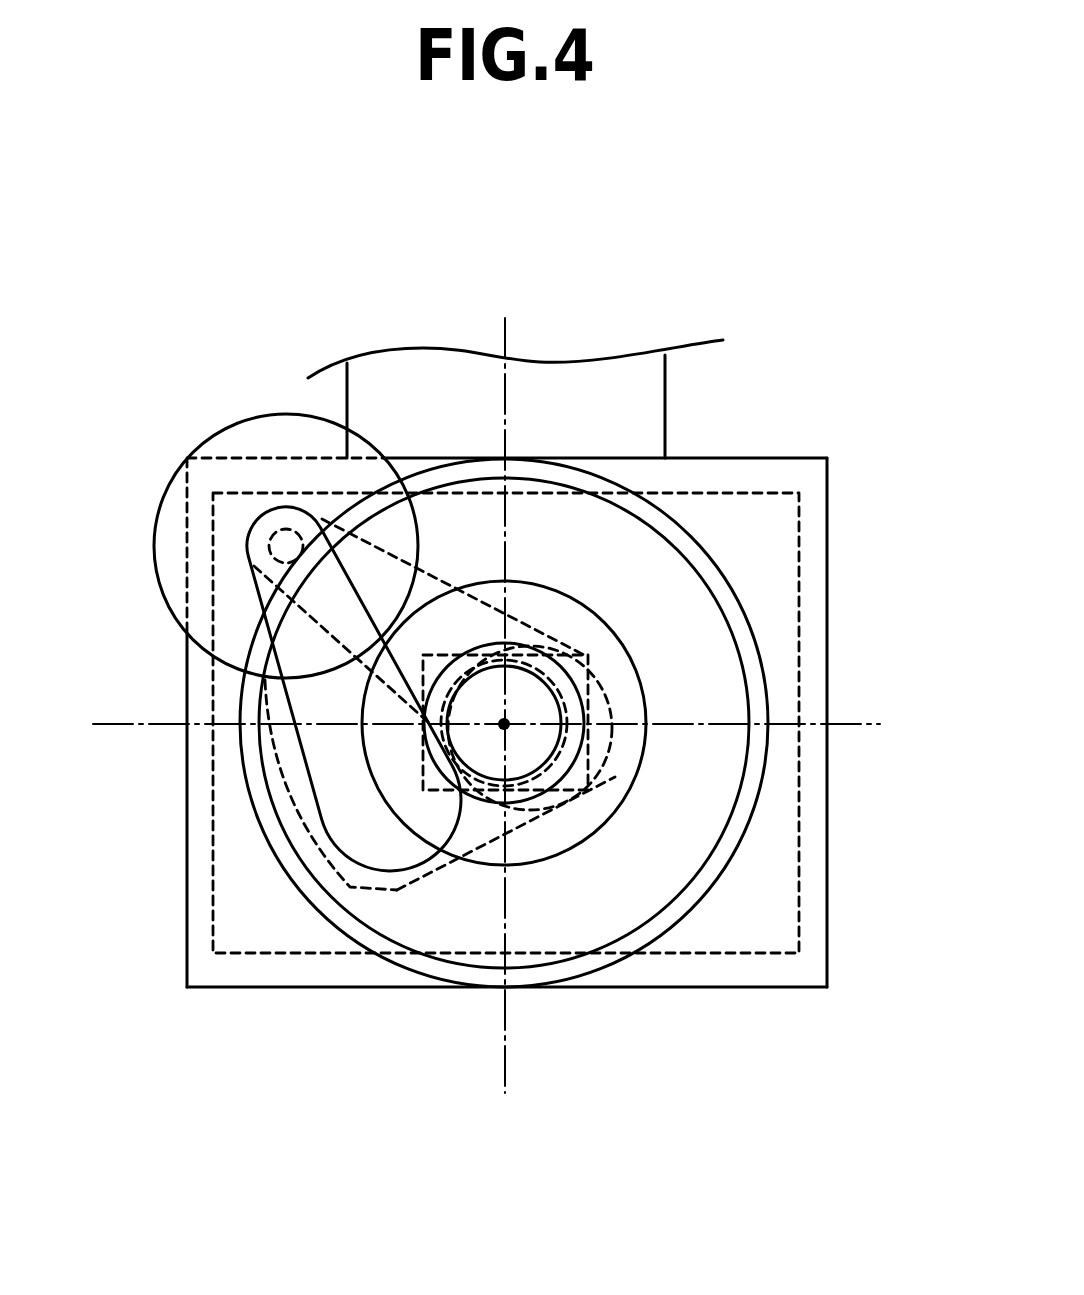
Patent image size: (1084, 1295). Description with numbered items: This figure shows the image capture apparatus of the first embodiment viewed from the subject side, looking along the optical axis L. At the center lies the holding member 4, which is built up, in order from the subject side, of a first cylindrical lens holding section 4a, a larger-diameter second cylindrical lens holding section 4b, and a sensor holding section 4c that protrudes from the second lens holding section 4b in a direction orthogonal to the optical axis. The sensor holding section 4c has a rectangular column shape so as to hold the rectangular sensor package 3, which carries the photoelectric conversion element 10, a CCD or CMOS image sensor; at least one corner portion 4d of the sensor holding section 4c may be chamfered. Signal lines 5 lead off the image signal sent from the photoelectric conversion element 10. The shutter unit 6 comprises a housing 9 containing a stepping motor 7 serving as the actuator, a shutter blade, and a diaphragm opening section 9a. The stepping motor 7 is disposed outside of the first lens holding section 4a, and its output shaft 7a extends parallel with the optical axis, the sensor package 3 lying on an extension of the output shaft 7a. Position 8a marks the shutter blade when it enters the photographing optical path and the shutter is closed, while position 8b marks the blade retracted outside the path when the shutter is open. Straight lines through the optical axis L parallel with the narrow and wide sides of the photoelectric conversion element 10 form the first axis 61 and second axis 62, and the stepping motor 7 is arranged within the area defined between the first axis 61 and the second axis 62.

The sensor package 3 is at (827, 873).
The holding member 4 is at (668, 970).
The first cylindrical lens holding section 4a is at (530, 580).
The second cylindrical lens holding section 4b is at (668, 510).
The sensor holding section 4c is at (742, 988).
The corner portion 4d is at (206, 478).
The signal lines 5 is at (630, 377).
The shutter unit 6 is at (368, 474).
The stepping motor 7 is at (268, 432).
The output shaft 7a is at (281, 545).
The position of the shutter blade when closed 8a is at (520, 632).
The position of the shutter blade when open 8b is at (413, 872).
The housing 9 is at (350, 882).
The diaphragm opening section 9a is at (560, 706).
The photoelectric conversion element 10 is at (583, 657).
The first axis 61 is at (506, 340).
The second axis 62 is at (230, 727).
The optical axis L is at (506, 726).